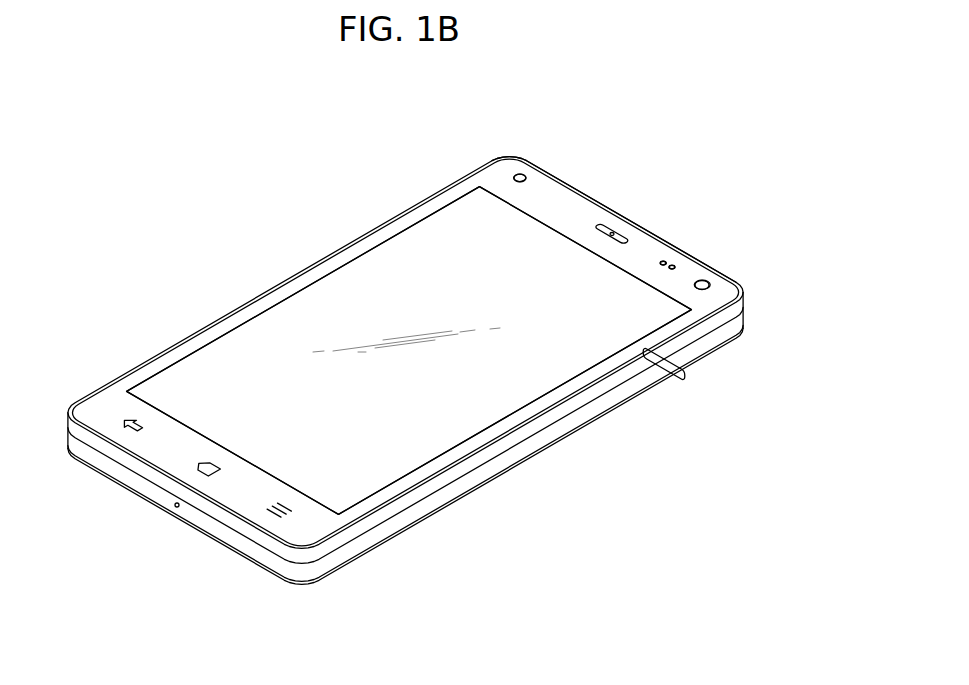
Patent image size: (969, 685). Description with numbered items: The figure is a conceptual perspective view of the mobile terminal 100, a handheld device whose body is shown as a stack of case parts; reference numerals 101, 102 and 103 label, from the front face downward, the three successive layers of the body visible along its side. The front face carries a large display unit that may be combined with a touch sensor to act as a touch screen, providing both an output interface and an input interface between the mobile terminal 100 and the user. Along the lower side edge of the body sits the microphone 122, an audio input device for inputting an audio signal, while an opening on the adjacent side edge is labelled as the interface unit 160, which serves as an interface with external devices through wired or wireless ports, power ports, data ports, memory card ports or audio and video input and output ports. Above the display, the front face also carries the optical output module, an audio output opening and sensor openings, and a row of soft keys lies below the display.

The mobile terminal 100 is at (443, 356).
The front case 101 is at (738, 305).
The rear case 102 is at (735, 323).
The rear cover 103 is at (732, 343).
The microphone 122 is at (175, 507).
The interface unit 160 is at (667, 367).